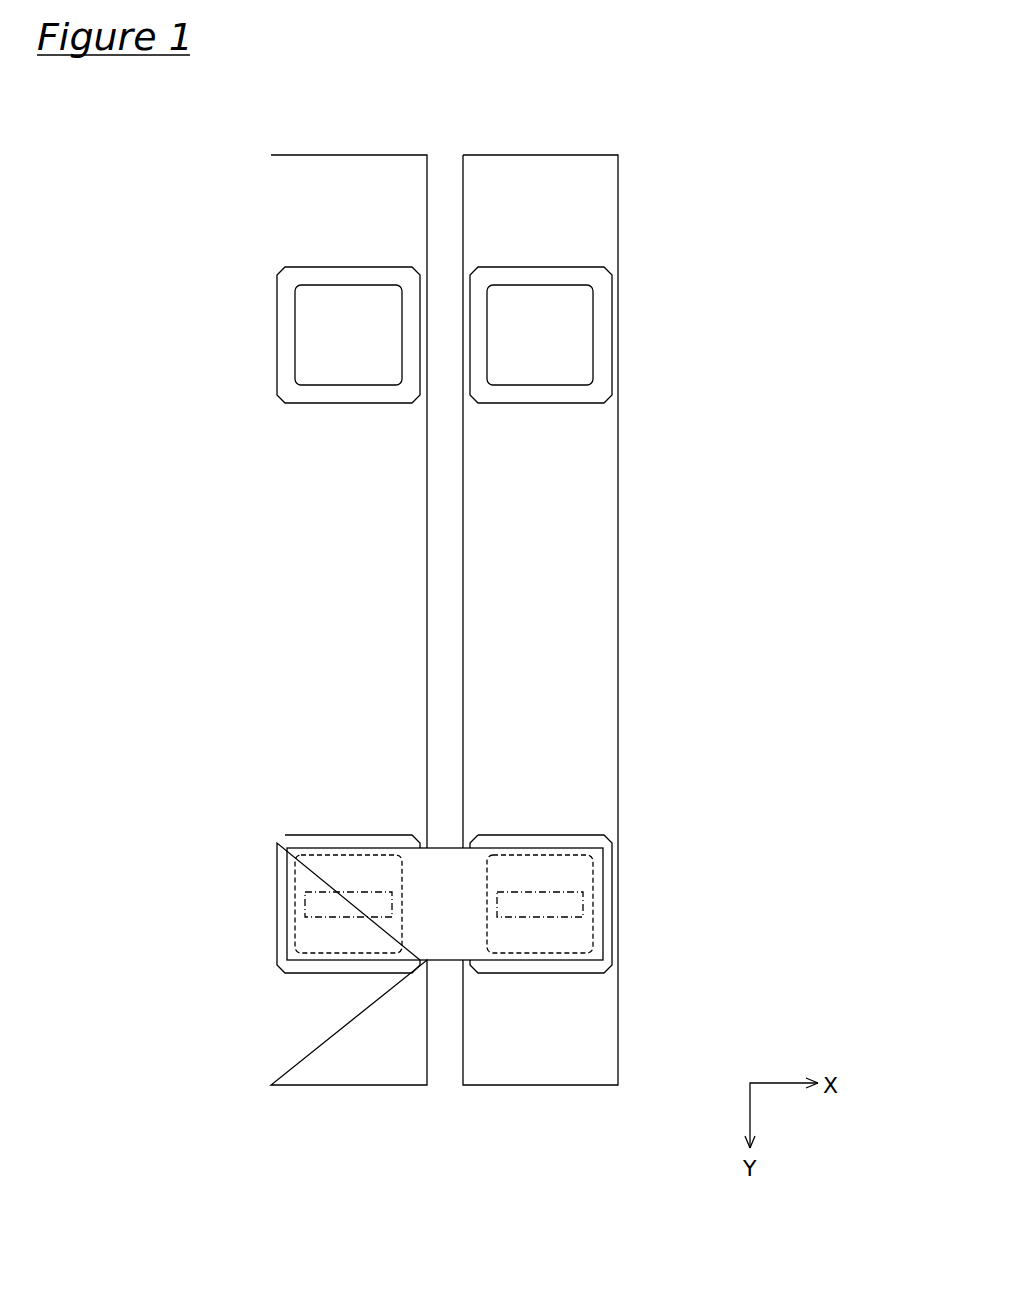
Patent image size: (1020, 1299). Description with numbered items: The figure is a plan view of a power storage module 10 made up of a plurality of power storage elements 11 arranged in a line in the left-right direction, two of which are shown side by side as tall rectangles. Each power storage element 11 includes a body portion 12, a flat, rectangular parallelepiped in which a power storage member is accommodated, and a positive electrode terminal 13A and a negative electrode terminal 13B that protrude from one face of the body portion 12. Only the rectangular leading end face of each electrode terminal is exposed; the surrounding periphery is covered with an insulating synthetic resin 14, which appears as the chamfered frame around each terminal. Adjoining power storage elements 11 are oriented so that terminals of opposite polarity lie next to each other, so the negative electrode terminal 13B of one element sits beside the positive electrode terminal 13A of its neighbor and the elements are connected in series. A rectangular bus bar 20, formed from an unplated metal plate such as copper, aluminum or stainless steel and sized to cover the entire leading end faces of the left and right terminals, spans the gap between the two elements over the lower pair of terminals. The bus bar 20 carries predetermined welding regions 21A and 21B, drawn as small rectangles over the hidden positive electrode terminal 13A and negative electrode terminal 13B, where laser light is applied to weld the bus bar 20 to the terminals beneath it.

The power storage module 10 is at (653, 141).
The power storage element 11 is at (363, 143).
The body portion 12 is at (300, 575).
The positive electrode terminal 13A is at (563, 340).
The negative electrode terminal 13B is at (325, 340).
The insulating synthetic resin 14 is at (287, 284).
The bus bar 20 is at (448, 923).
The welding region 21A is at (319, 892).
The welding region 21B is at (570, 892).